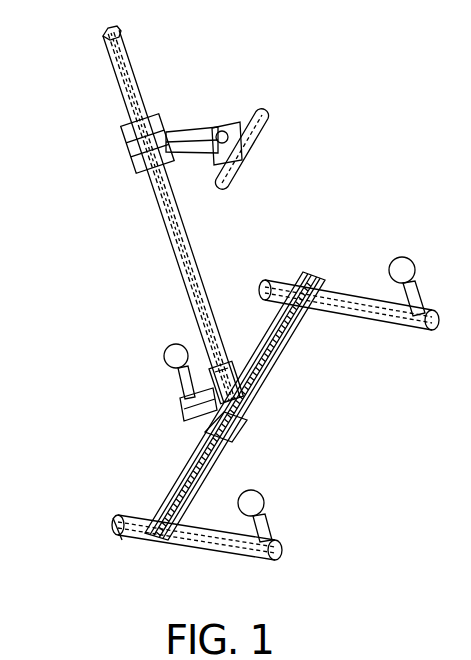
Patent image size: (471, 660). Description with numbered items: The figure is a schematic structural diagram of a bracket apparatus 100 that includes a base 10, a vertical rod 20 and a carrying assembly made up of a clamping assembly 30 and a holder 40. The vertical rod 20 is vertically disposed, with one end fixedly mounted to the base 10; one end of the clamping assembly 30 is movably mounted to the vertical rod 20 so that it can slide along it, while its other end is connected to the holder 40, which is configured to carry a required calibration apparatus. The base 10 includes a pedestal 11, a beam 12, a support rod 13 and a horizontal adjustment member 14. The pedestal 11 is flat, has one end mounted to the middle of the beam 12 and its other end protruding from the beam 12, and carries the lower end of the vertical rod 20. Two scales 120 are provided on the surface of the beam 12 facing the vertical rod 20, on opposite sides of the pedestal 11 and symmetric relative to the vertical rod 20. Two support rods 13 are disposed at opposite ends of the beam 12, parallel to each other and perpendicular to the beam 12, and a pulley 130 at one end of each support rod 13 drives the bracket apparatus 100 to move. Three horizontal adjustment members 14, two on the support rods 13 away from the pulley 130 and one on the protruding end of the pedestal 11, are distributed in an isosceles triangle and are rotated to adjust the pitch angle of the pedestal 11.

The bracket apparatus 100 is at (336, 58).
The base 10 is at (60, 333).
The pedestal 11 is at (193, 412).
The beam 12 is at (207, 434).
The support rod 13 is at (346, 297).
The horizontal adjustment member 14 is at (404, 268).
The vertical rod 20 is at (118, 73).
The clamping assembly 30 is at (148, 146).
The holder 40 is at (262, 129).
The scale 120 is at (280, 305).
The pulley 130 is at (122, 538).